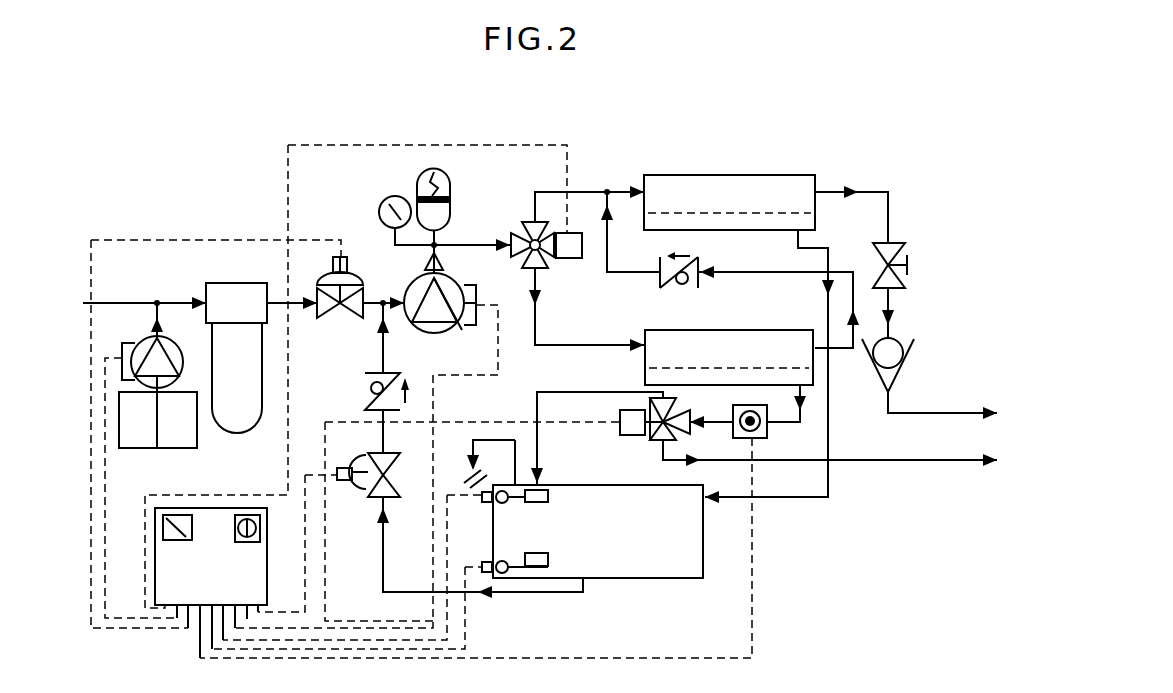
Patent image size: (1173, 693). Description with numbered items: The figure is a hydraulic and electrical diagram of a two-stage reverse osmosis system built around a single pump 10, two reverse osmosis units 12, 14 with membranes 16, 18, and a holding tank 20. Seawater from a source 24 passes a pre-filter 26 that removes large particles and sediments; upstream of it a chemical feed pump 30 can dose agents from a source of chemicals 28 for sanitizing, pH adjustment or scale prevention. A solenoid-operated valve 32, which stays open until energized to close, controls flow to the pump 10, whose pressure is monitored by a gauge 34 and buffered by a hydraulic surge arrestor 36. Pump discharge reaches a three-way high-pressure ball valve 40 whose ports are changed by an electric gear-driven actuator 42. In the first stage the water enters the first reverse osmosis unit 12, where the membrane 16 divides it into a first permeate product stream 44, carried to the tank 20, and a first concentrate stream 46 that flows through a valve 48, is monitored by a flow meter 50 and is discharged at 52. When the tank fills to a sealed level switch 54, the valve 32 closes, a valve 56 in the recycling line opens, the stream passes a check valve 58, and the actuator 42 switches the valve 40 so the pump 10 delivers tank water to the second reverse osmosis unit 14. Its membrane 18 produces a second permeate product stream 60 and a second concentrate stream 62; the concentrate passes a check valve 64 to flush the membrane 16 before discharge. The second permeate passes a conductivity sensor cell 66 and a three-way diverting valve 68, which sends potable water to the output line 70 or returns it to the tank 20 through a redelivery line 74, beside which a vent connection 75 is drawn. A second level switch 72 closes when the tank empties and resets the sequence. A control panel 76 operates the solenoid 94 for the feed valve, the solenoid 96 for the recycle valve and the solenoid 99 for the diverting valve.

The pump 10 is at (440, 325).
The first reverse osmosis unit 12 is at (740, 175).
The second reverse osmosis unit 14 is at (724, 330).
The first membrane 16 is at (796, 213).
The second membrane 18 is at (776, 368).
The holding tank 20 is at (680, 575).
The source 24 is at (100, 303).
The pre-filter 26 is at (246, 297).
The source of chemicals 28 is at (134, 437).
The chemical feed pump 30 is at (148, 352).
The valve 32 is at (338, 308).
The gauge 34 is at (386, 199).
The hydraulic surge arrestor 36 is at (450, 186).
The valve 40 is at (526, 228).
The actuator 42 is at (570, 250).
The first permeate product stream 44 is at (806, 258).
The first concentrate stream 46 is at (889, 213).
The valve 48 is at (906, 248).
The flow meter 50 is at (916, 360).
The discharge point 52 is at (928, 413).
The level switch 54 is at (548, 502).
The valve 56 is at (392, 498).
The check valve 58 is at (362, 372).
The second permeate product stream 60 is at (806, 407).
The second concentrate stream 62 is at (737, 272).
The check valve 64 is at (666, 282).
The sensor cell 66 is at (768, 428).
The three-way diverting valve 68 is at (658, 405).
The output line 70 is at (912, 461).
The second level switch 72 is at (549, 556).
The redelivery line 74 is at (538, 441).
The vent line 75 is at (473, 440).
The control panel 76 is at (253, 575).
The solenoid 94 is at (343, 276).
The solenoid 96 is at (356, 490).
The solenoid 99 is at (633, 436).